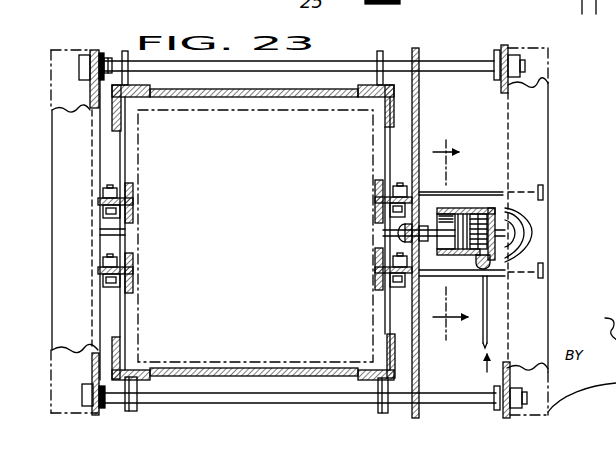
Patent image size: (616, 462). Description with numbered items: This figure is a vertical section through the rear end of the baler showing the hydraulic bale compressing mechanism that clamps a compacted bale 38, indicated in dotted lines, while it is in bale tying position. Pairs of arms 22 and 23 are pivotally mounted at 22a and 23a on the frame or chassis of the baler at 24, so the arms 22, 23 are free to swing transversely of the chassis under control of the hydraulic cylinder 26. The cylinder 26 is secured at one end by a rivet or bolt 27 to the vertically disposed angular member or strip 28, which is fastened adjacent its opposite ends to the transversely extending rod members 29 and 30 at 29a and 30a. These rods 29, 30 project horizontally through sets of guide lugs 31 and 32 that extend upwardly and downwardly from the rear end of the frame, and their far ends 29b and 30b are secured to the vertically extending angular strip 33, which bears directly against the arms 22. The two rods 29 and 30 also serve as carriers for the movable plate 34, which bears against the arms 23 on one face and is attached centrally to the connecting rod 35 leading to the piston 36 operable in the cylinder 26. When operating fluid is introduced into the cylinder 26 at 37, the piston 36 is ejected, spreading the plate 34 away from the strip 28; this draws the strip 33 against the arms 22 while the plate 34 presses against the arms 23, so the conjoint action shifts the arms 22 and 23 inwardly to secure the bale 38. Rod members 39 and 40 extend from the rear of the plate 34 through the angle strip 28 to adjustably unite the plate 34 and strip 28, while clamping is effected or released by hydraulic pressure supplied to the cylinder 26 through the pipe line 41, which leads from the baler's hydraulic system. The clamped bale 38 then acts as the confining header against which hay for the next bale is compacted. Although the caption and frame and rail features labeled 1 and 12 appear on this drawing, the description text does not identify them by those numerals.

The door frame 1 is at (353, 98).
The frame rail 12 is at (240, 96).
The arms 22 is at (134, 186).
The pivot 22a is at (108, 190).
The arms 23 is at (377, 214).
The pivot 23a is at (392, 187).
The frame mounting point 24 is at (450, 239).
The hydraulic cylinder 26 is at (466, 208).
The rivet or bolt 27 is at (532, 232).
The angular member or strip 28 is at (543, 160).
The rod member 29 is at (433, 66).
The securing point of rod member 29 29a is at (507, 60).
The end of rod member 29 29b is at (82, 58).
The rod member 30 is at (486, 402).
The securing point of rod member 30 30a is at (515, 388).
The end of rod member 30 30b is at (140, 362).
The guide lugs 31 is at (124, 52).
The guide lugs 32 is at (134, 410).
The angular strip 33 is at (88, 322).
The movable plate 34 is at (419, 84).
The connecting rod 35 is at (398, 234).
The piston 36 is at (468, 213).
The operating fluid introduction point 37 is at (497, 222).
The bale 38 is at (220, 113).
The rod member 39 is at (491, 212).
The rod member 40 is at (462, 278).
The pipe line 41 is at (489, 321).